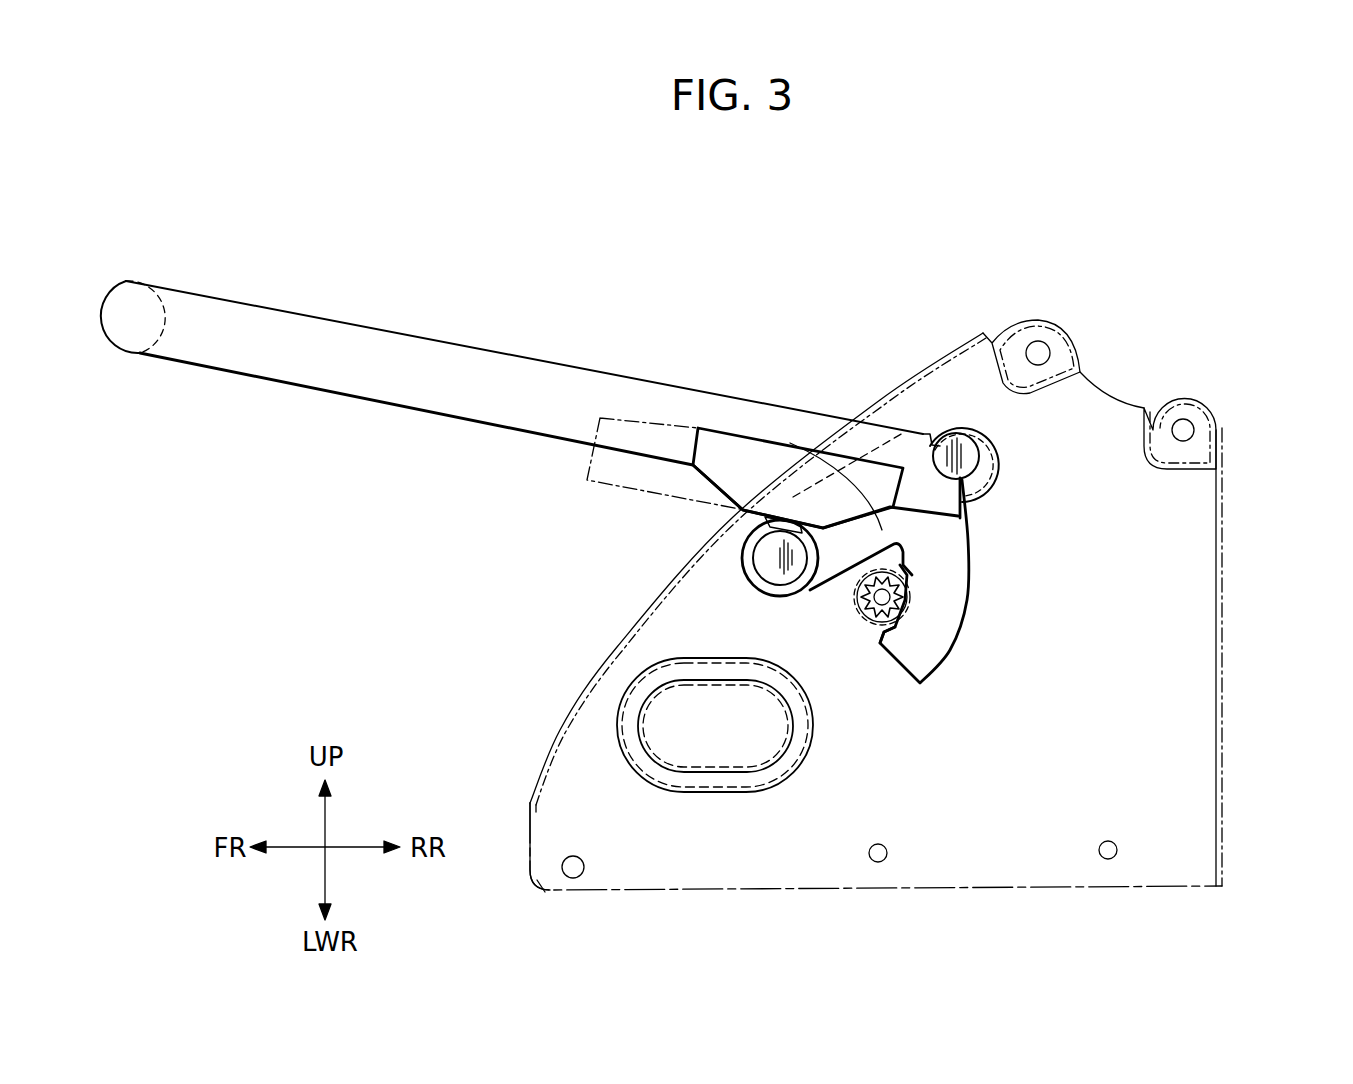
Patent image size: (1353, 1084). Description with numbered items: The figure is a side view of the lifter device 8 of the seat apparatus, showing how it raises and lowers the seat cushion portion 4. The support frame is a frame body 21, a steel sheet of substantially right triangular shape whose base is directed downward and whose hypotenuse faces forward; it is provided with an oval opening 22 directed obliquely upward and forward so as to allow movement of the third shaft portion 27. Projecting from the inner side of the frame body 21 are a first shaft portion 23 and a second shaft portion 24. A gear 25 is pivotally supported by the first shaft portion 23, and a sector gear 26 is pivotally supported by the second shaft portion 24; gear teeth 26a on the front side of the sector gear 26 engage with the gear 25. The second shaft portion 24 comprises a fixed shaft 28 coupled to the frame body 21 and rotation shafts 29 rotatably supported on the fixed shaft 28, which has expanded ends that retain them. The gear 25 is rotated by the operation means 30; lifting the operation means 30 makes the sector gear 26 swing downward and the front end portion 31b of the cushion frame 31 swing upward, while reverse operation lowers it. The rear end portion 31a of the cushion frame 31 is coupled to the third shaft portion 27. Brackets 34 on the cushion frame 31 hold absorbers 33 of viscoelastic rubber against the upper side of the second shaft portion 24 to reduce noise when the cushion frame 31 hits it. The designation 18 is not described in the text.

The seat cushion portion 4 is at (357, 310).
The lifter device 8 is at (582, 649).
The parking brake device 18 is at (623, 546).
The frame body 21 is at (1180, 722).
The oval opening 22 is at (1000, 488).
The first shaft portion 23 is at (868, 627).
The second shaft portion 24 is at (743, 580).
The gear 25 is at (858, 626).
The sector gear 26 is at (942, 634).
The gear teeth 26a is at (900, 634).
The third shaft portion 27 is at (968, 447).
The fixed shaft 28 is at (776, 577).
The rotation shaft 29 is at (803, 577).
The operation means 30 is at (600, 480).
The cushion frame 31 is at (302, 362).
The rear end portion 31a is at (915, 450).
The front end portion 31b is at (128, 308).
The absorber 33 is at (745, 518).
The bracket 34 is at (722, 455).